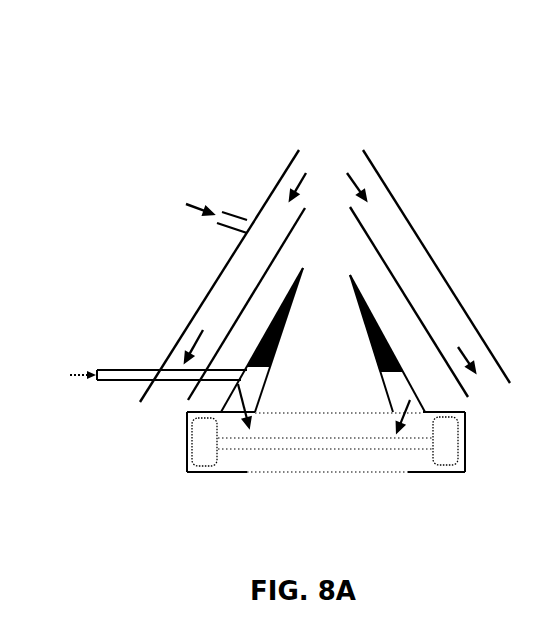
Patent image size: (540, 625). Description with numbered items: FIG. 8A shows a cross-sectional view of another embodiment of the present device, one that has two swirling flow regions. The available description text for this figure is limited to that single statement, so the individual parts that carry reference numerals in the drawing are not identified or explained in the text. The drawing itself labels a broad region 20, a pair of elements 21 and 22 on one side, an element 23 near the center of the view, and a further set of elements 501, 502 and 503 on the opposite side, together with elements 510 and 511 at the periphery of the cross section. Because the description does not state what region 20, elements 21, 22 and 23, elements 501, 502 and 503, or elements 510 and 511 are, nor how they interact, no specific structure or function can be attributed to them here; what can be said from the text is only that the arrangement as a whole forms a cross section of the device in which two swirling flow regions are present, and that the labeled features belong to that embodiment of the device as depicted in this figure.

The material flow cone / feed stream 20 is at (352, 100).
The right guide plate 21 is at (400, 188).
The right inner guide plate 22 is at (400, 283).
The central gap / nozzle stream 23 is at (318, 393).
The left outer guide plate 501 is at (272, 190).
The left inner guide plate 502 is at (253, 283).
The left funnel channel 503 is at (257, 347).
The input flow arrow 510 is at (218, 212).
The scraper bar 511 is at (99, 370).